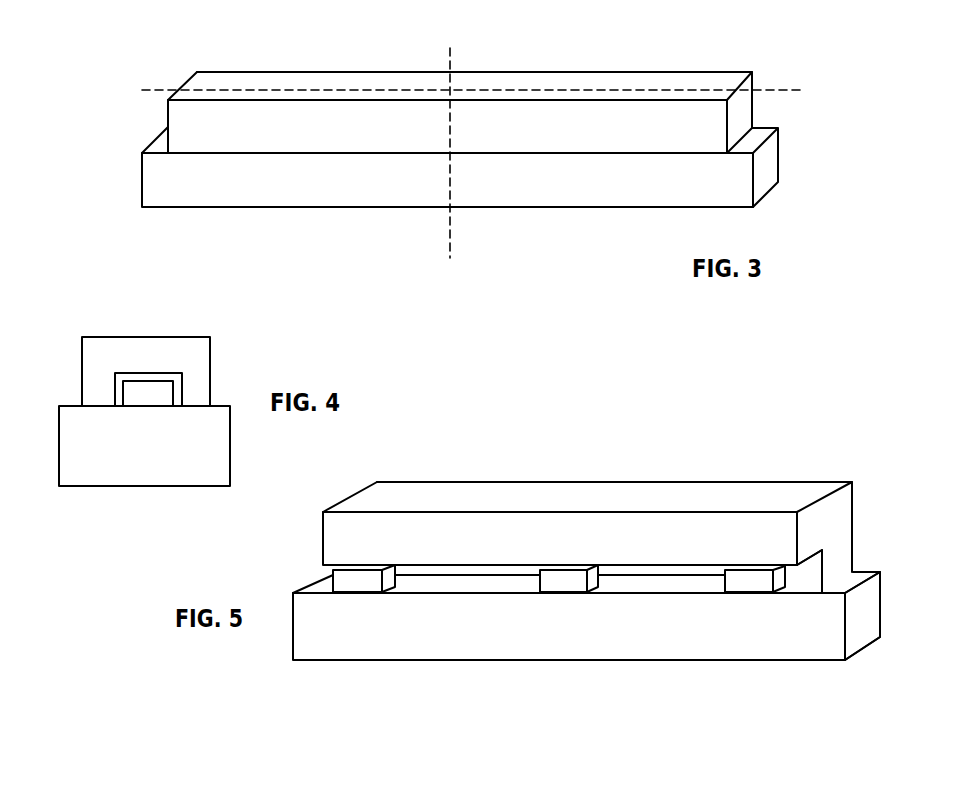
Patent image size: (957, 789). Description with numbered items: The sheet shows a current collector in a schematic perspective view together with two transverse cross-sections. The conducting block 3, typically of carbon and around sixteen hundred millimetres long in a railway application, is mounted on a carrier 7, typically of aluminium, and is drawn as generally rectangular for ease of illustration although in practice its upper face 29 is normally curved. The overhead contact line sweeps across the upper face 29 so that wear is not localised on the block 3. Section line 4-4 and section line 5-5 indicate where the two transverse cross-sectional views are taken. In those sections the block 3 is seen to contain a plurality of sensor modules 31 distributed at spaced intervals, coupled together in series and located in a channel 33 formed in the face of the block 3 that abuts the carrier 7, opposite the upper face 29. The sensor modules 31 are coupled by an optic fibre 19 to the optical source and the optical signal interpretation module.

In FIG. 3, the conducting block 3 is at (707, 122).
In FIG. 4, the conducting block 3 is at (113, 353).
In FIG. 5, the conducting block 3 is at (513, 523).
In FIG. 3, the line 4- 4 is at (443, 258).
In FIG. 3, the line 5- 5 is at (800, 85).
In FIG. 3, the carrier 7 is at (762, 170).
In FIG. 4, the carrier 7 is at (150, 443).
In FIG. 5, the carrier 7 is at (590, 625).
In FIG. 5, the optic fibre 19 is at (877, 623).
In FIG. 3, the upper face 29 is at (578, 82).
In FIG. 5, the upper face 29 is at (615, 497).
In FIG. 4, the sensor modules 31 is at (153, 394).
In FIG. 5, the sensor modules 31 is at (358, 582).
In FIG. 4, the channel 33 is at (165, 382).
In FIG. 5, the channel 33 is at (785, 575).